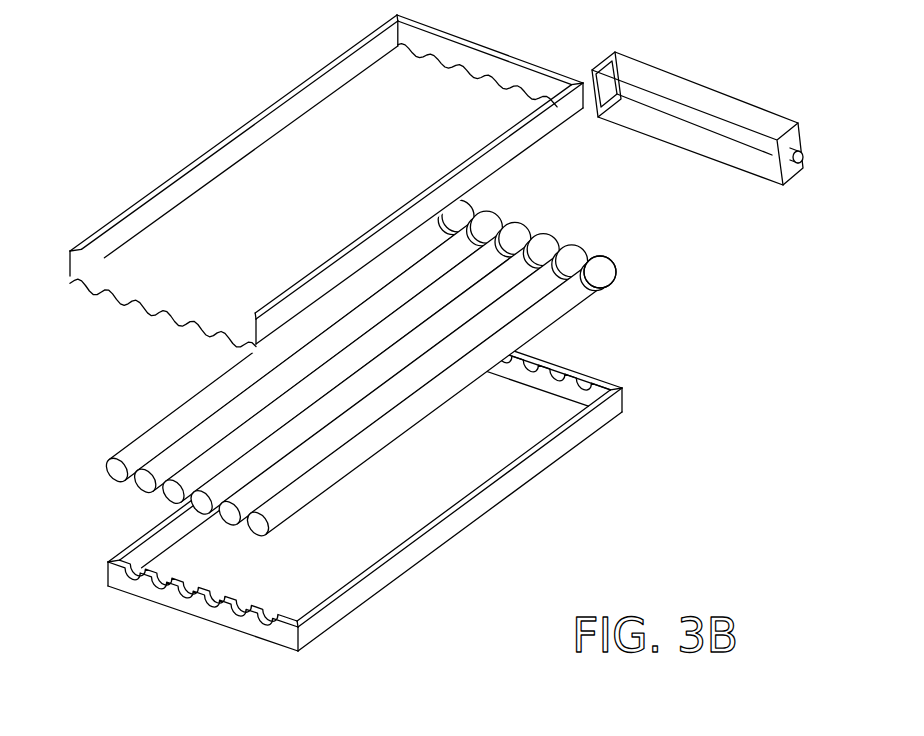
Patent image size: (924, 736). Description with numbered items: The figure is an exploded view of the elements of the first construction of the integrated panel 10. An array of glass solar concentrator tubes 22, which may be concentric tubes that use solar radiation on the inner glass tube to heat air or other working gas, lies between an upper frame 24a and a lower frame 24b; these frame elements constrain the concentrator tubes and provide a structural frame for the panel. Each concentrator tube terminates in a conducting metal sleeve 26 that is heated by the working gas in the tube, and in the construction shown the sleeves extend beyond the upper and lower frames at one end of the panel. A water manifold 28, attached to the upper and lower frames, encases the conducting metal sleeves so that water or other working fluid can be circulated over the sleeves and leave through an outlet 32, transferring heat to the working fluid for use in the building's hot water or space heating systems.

The tube support assembly 10 is at (420, 331).
The glass solar concentrator tubes 22 is at (193, 413).
The upper frame 24a is at (143, 200).
The lower frame 24b is at (527, 483).
The conducting metal sleeve 26 is at (612, 277).
The water manifold 28 is at (703, 137).
The outlet 32 is at (803, 157).